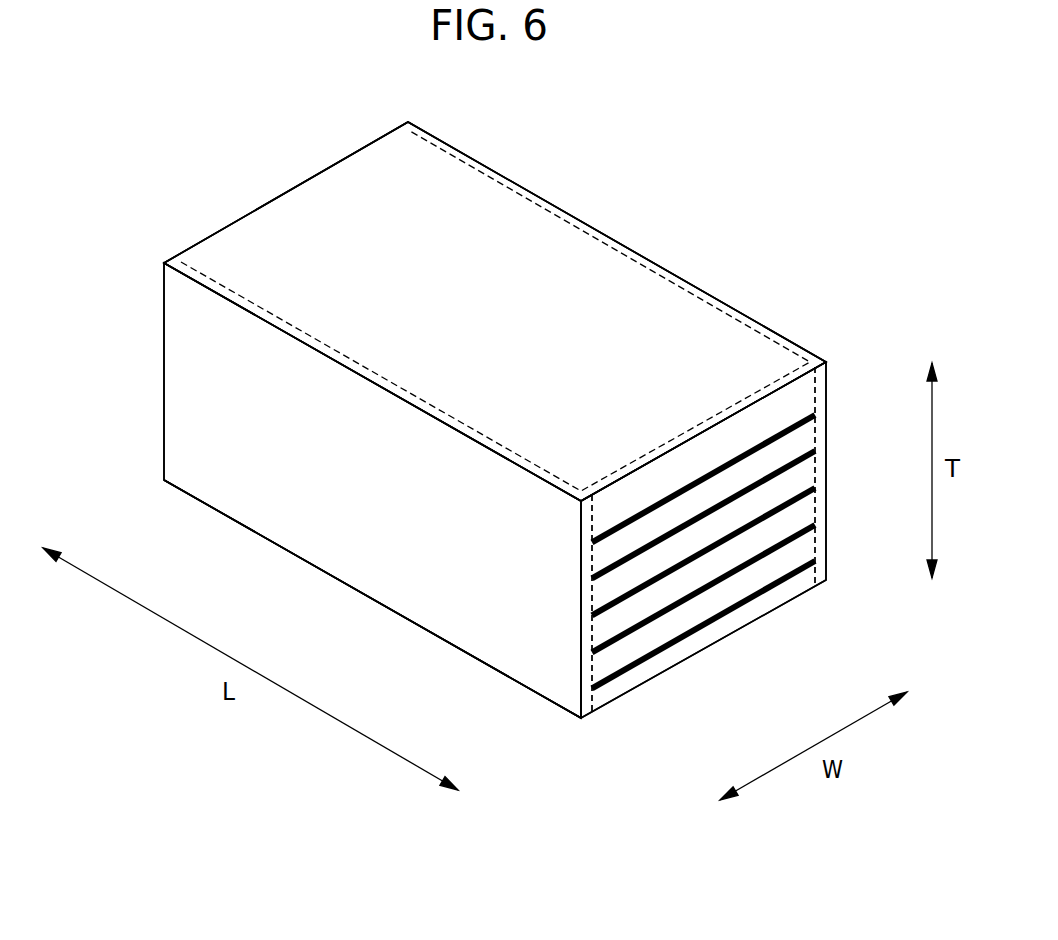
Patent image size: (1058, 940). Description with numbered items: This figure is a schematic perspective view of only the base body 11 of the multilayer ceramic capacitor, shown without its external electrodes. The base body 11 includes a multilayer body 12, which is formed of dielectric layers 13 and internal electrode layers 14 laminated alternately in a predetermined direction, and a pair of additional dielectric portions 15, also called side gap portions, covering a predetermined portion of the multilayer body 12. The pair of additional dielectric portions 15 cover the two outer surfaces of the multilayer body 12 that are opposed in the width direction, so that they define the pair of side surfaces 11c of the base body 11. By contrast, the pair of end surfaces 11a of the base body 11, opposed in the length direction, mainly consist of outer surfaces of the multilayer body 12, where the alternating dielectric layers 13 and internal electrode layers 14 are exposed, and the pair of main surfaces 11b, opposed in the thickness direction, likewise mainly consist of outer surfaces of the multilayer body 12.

The base body 11 is at (822, 205).
The end surfaces 11a is at (297, 250).
The main surfaces 11b is at (502, 222).
The side surfaces 11c is at (675, 337).
The multilayer body 12 is at (360, 185).
The dielectric layers 13 is at (735, 590).
The internal electrode layers 14 is at (665, 610).
The additional dielectric portions 15 is at (605, 243).